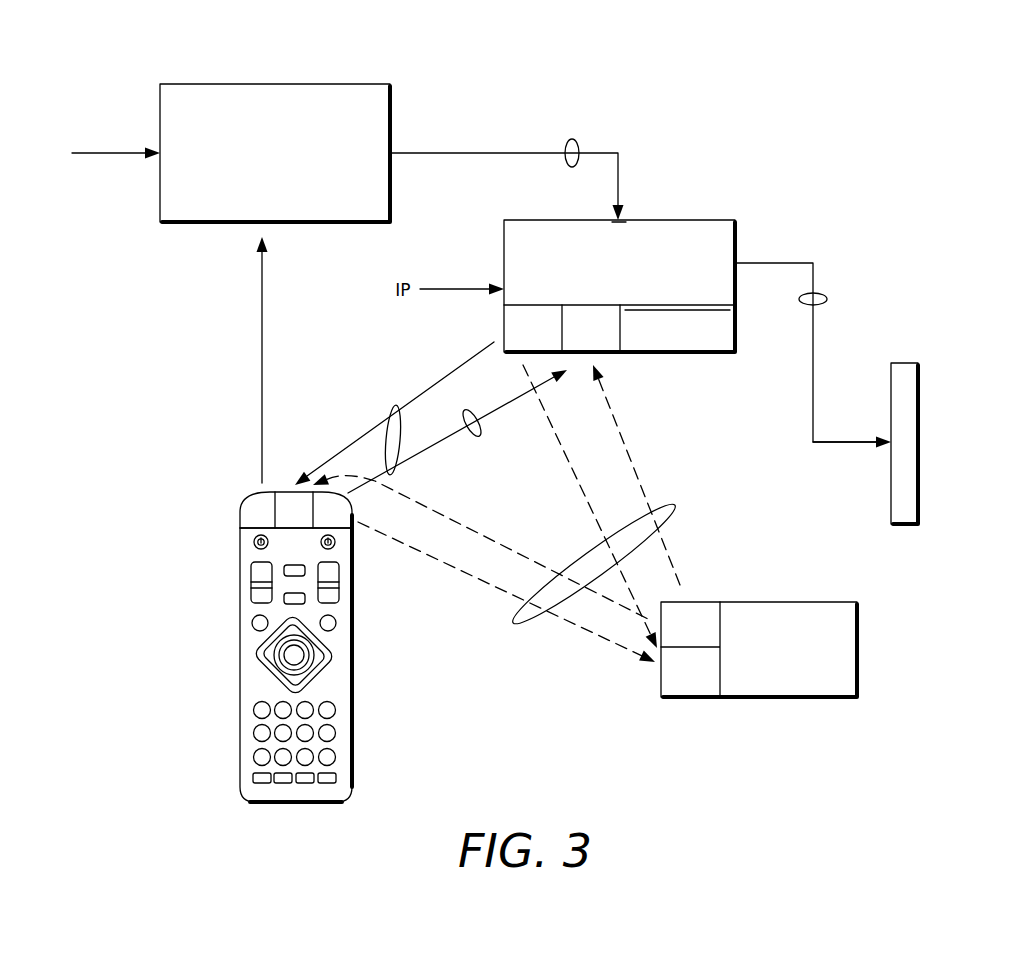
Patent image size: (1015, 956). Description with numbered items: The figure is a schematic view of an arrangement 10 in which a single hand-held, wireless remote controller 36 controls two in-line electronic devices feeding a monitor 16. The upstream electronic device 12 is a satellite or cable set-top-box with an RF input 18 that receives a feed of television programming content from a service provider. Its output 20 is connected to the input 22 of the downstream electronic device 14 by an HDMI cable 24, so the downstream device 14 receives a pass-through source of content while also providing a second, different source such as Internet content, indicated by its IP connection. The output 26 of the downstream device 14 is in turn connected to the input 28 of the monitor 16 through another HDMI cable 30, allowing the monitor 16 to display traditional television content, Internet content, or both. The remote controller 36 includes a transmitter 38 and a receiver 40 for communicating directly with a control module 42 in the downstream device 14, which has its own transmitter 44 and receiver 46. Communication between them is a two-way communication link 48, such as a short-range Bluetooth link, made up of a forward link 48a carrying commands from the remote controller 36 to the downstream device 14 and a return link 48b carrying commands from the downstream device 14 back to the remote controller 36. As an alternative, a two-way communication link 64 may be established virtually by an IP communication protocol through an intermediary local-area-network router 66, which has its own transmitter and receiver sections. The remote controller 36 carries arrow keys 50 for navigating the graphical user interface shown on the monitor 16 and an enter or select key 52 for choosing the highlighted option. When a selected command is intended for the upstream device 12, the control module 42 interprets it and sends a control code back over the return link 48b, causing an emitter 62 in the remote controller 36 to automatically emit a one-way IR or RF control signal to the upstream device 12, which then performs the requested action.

The arrangement 10 is at (934, 125).
The upstream electronic device 12 is at (176, 84).
The downstream electronic device 14 is at (696, 222).
The monitor 16 is at (920, 442).
The input 18 is at (158, 156).
The output 20 is at (392, 156).
The input 22 is at (625, 219).
The HDMI cable 24 is at (572, 139).
The output 26 is at (735, 266).
The input 28 is at (888, 440).
The HDMI cable 30 is at (815, 294).
The remote controller 36 is at (345, 645).
The transmitter 38 is at (350, 511).
The receiver 40 is at (288, 492).
The control module 42 is at (668, 347).
The transmitter 44 is at (533, 310).
The receiver 46 is at (588, 310).
The two-way communication link 48 is at (393, 406).
The forward link 48a is at (473, 438).
The return link 48b is at (362, 436).
The arrow keys 50 is at (266, 660).
The enter or select key 52 is at (297, 657).
The emitter 62 is at (252, 499).
The alternate two-way communication link 64 is at (672, 509).
The LAN router 66 is at (857, 648).